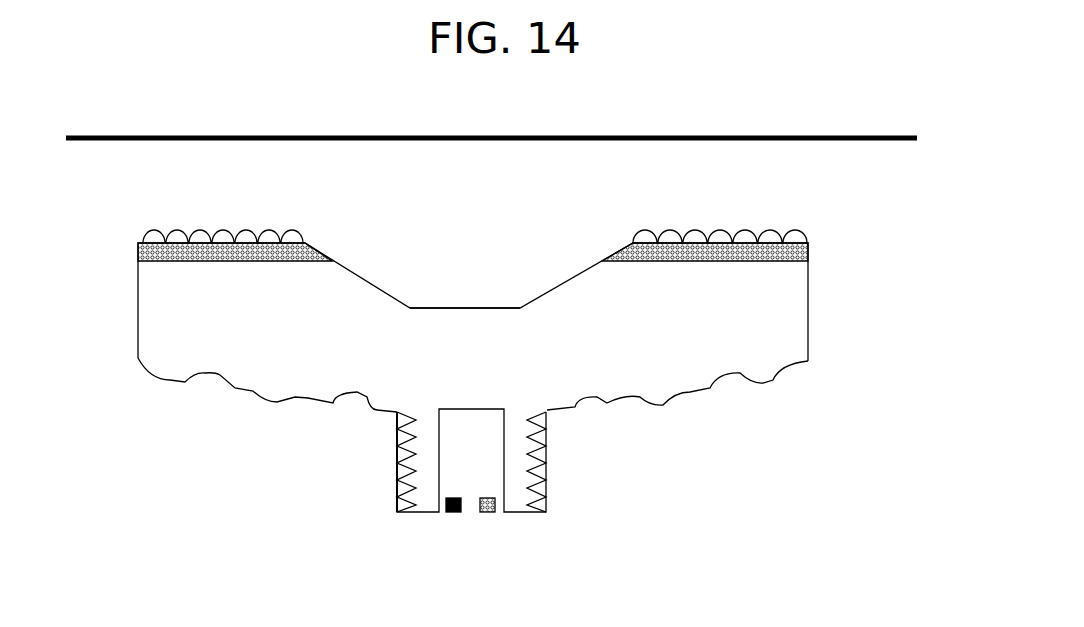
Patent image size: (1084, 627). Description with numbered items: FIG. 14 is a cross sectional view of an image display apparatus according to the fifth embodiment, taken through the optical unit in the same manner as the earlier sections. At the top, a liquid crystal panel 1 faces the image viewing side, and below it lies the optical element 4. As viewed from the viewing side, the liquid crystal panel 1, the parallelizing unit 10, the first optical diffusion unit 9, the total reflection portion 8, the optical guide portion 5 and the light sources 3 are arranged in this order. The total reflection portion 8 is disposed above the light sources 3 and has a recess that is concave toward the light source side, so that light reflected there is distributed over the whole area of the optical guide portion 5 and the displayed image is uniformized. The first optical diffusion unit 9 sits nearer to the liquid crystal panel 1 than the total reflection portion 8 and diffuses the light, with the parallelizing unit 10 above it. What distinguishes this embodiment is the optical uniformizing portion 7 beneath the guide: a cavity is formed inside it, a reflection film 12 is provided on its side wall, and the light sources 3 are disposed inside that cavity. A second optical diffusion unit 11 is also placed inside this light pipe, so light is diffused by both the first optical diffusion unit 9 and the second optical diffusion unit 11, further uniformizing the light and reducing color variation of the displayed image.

The liquid crystal panel 1 is at (503, 146).
The light source 3 is at (447, 513).
The optical element 4 is at (778, 326).
The optical guide portion 5 is at (225, 388).
The optical uniformizing portion 7 is at (517, 497).
The total reflection portion 8 is at (465, 312).
The first optical diffusion unit 9 is at (808, 247).
The parallelizing unit 10 is at (226, 238).
The second optical diffusion unit 11 is at (397, 437).
The reflection film 12 is at (397, 485).